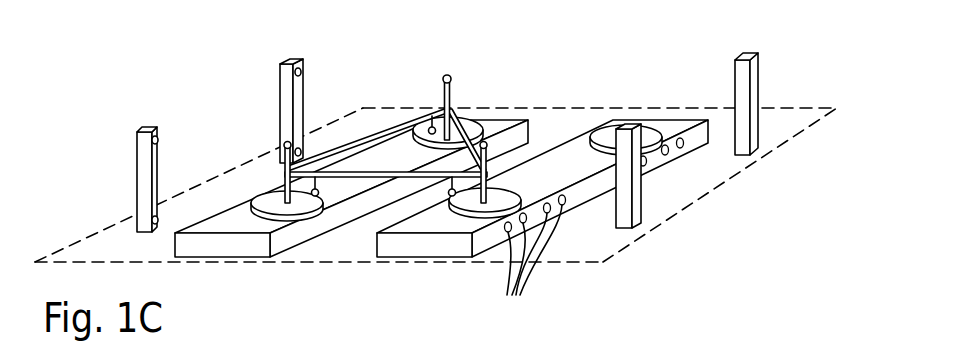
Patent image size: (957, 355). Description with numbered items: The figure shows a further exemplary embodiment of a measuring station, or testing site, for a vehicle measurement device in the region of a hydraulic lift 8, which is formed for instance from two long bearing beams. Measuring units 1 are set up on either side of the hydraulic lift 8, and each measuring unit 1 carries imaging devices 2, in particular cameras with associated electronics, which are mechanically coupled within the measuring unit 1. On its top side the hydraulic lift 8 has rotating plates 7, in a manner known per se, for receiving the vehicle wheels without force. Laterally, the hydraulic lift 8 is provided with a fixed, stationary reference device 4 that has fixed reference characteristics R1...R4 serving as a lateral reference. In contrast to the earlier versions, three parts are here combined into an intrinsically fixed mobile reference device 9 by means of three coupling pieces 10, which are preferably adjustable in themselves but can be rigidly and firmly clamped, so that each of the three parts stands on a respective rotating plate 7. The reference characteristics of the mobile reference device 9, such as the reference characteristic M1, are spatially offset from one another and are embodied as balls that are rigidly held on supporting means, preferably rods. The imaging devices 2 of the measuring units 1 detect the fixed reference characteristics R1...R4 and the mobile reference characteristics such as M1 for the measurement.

The measuring unit 1 is at (137, 152).
The imaging device 2 is at (158, 218).
The fixed reference device 4 is at (580, 203).
The rotating plate 7 is at (648, 128).
The hydraulic lift 8 is at (240, 248).
The mobile reference device 9 is at (348, 134).
The coupling piece 10 is at (380, 137).
The reference characteristic M1 is at (447, 75).
The fixed reference characteristics R1...R4 is at (518, 268).